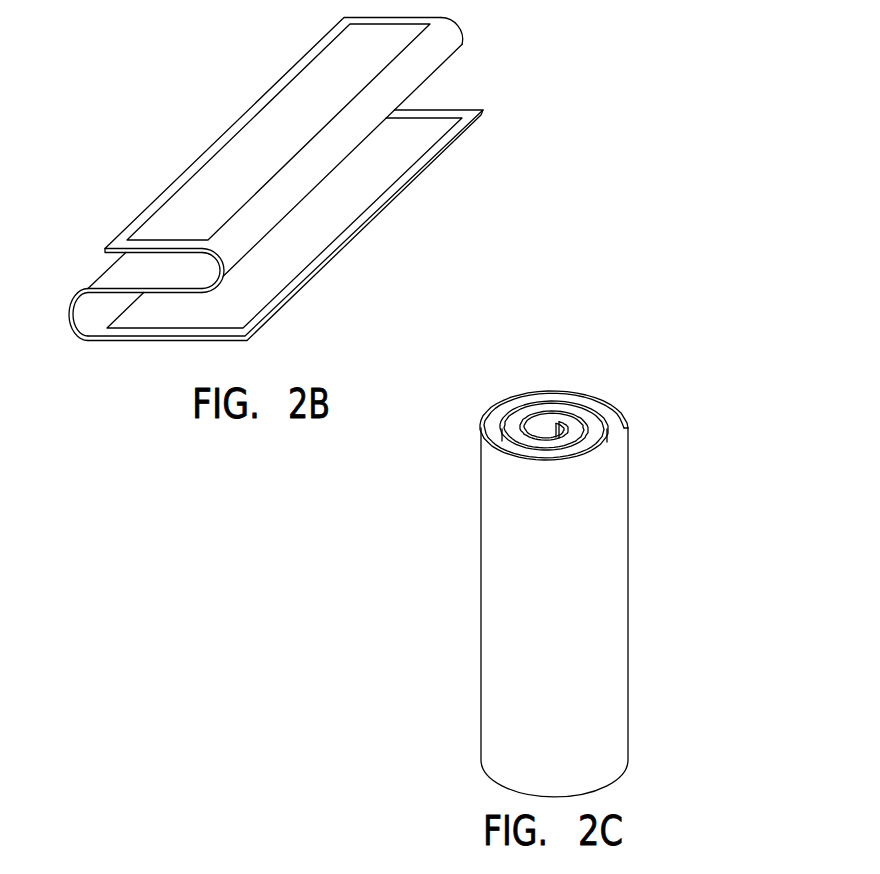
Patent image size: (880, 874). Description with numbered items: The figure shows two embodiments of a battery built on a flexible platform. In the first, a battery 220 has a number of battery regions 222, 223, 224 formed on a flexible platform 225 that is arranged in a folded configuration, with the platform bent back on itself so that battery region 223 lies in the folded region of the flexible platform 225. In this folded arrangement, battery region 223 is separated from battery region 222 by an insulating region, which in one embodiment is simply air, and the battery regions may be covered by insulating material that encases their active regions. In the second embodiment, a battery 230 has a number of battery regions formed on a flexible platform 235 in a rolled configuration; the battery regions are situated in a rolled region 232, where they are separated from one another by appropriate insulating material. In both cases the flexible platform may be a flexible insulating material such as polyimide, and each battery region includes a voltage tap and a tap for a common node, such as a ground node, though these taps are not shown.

In FIG. 2B, the battery 220 is at (160, 128).
In FIG. 2B, the battery region 222 is at (328, 230).
In FIG. 2B, the battery region 223 is at (167, 295).
In FIG. 2B, the battery region 224 is at (299, 88).
In FIG. 2B, the flexible platform 225 is at (447, 44).
In FIG. 2C, the battery 230 is at (447, 671).
In FIG. 2C, the rolled region 232 is at (541, 389).
In FIG. 2C, the flexible platform 235 is at (618, 496).